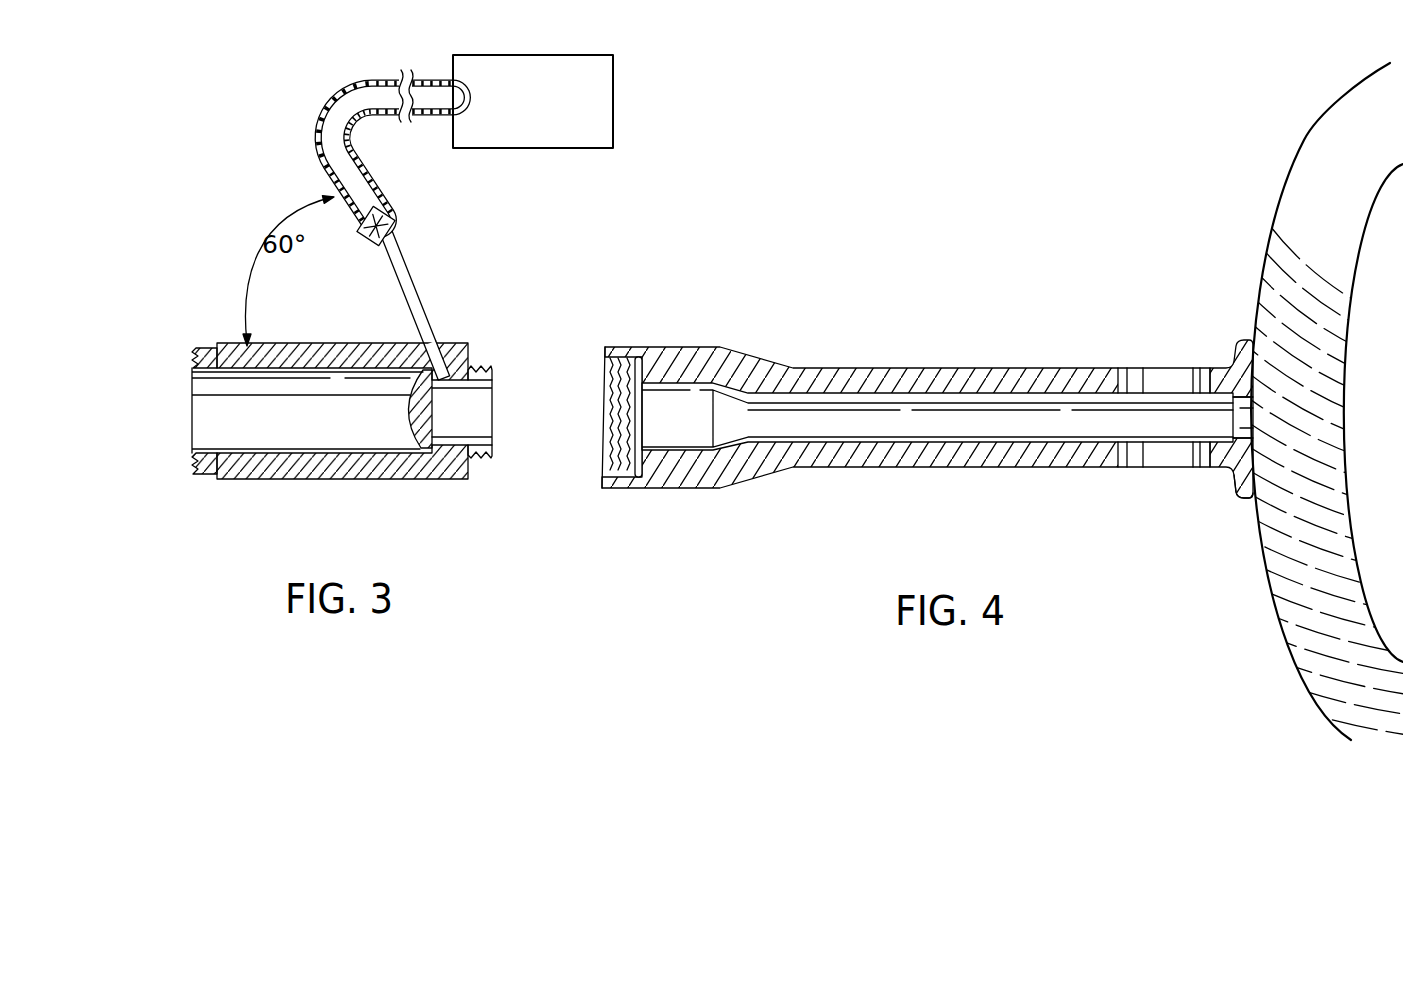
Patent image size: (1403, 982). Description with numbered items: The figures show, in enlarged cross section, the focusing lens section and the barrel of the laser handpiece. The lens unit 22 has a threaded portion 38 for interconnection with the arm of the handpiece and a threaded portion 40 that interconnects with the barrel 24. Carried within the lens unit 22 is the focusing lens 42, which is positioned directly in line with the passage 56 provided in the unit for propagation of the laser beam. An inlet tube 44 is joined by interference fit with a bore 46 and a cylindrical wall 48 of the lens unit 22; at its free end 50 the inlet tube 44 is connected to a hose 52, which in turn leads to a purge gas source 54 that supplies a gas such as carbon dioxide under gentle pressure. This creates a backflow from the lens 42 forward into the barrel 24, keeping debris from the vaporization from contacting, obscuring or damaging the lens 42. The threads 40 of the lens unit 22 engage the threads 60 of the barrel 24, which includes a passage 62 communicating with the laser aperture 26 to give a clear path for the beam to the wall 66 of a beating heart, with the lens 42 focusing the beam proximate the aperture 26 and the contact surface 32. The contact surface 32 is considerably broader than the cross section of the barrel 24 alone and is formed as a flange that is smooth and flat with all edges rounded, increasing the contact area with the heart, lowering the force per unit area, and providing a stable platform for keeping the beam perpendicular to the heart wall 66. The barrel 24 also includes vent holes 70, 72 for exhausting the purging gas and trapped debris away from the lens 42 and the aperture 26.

In FIG. 3, the lens unit 22 is at (330, 420).
In FIG. 4, the barrel 24 is at (910, 422).
In FIG. 4, the laser aperture 26 is at (1233, 427).
In FIG. 4, the contact surface 32 is at (1253, 505).
In FIG. 3, the threaded portion 38 is at (199, 350).
In FIG. 3, the threaded portion 40 is at (474, 366).
In FIG. 3, the focusing lens 42 is at (407, 418).
In FIG. 3, the inlet tube 44 is at (416, 290).
In FIG. 3, the bore 46 is at (410, 343).
In FIG. 3, the cylindrical wall 48 is at (306, 343).
In FIG. 3, the free end 50 is at (393, 240).
In FIG. 3, the hose 52 is at (359, 166).
In FIG. 3, the purge gas source 54 is at (615, 113).
In FIG. 3, the passage 56 is at (202, 423).
In FIG. 4, the threads 60 is at (603, 380).
In FIG. 4, the passage 62 is at (797, 425).
In FIG. 4, the wall 66 is at (1343, 353).
In FIG. 4, the vent hole 70 is at (1137, 371).
In FIG. 4, the vent hole 72 is at (1135, 467).